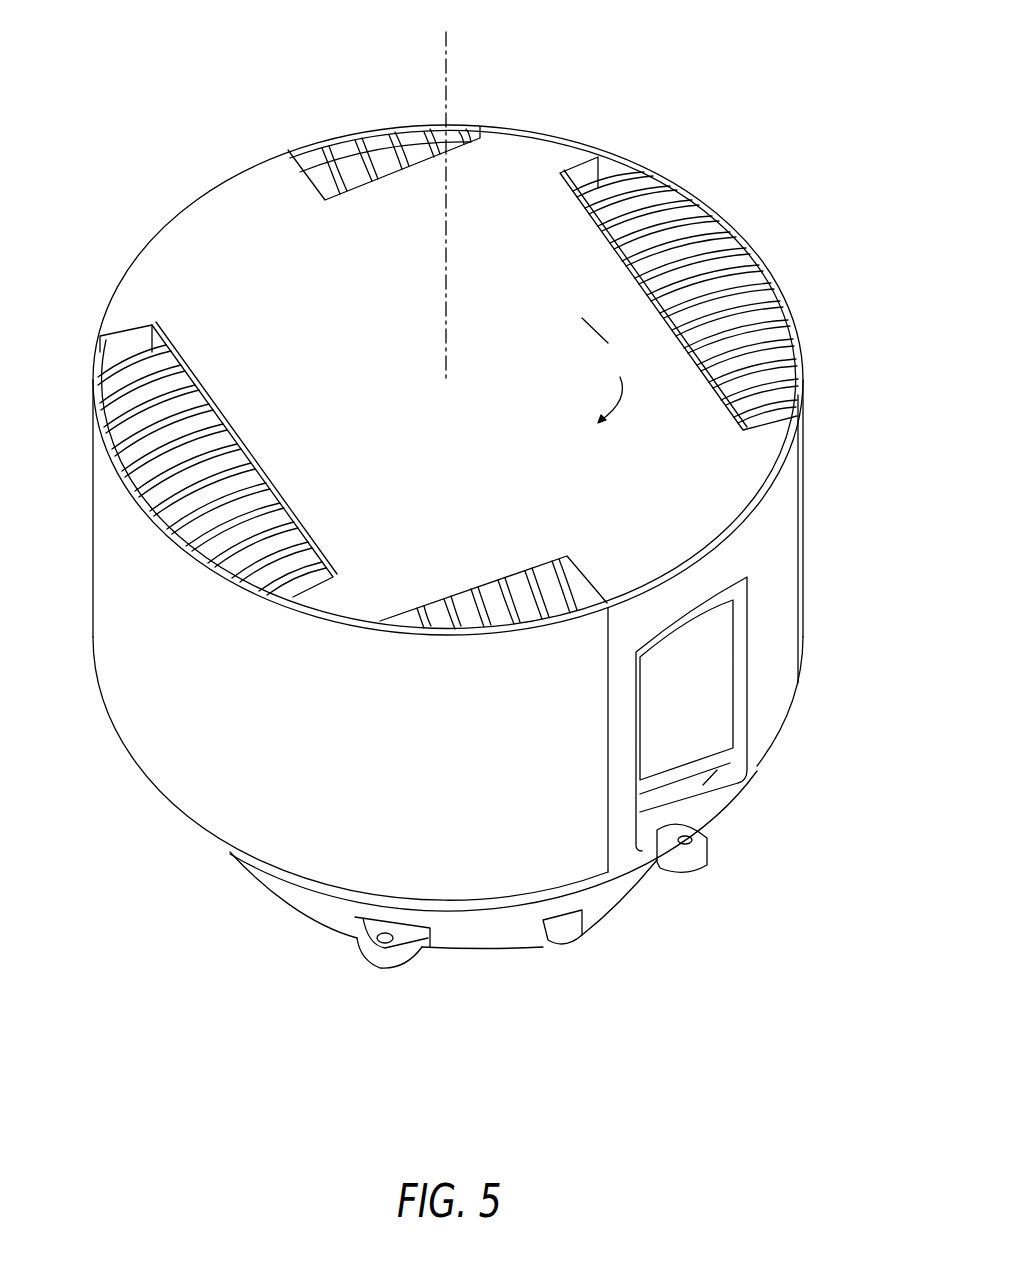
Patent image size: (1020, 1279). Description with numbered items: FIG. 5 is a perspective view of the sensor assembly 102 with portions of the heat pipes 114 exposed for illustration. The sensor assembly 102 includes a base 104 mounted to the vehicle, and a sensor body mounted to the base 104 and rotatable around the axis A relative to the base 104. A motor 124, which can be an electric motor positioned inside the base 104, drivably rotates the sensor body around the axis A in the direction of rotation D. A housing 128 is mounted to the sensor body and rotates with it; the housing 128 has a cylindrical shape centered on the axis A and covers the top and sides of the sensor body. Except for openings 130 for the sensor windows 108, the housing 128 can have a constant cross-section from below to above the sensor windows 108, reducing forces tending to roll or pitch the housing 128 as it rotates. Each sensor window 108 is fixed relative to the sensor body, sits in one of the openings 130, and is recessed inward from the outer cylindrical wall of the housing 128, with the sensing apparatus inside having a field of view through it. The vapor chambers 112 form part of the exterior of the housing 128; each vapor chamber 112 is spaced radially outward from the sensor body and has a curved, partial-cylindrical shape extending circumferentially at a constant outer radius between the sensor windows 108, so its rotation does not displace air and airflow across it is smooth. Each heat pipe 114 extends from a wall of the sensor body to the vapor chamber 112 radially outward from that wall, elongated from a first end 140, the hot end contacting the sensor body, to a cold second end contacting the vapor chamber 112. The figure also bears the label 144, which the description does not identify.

The sensor assembly 102 is at (226, 76).
The base 104 is at (497, 947).
The sensor window 108 is at (693, 683).
The vapor chamber 112 is at (805, 452).
The heat pipe 114 is at (210, 418).
The motor 124 is at (465, 928).
The housing 128 is at (815, 560).
The opening 130 is at (660, 826).
The first end 140 is at (313, 587).
The louver slats 144 is at (272, 567).